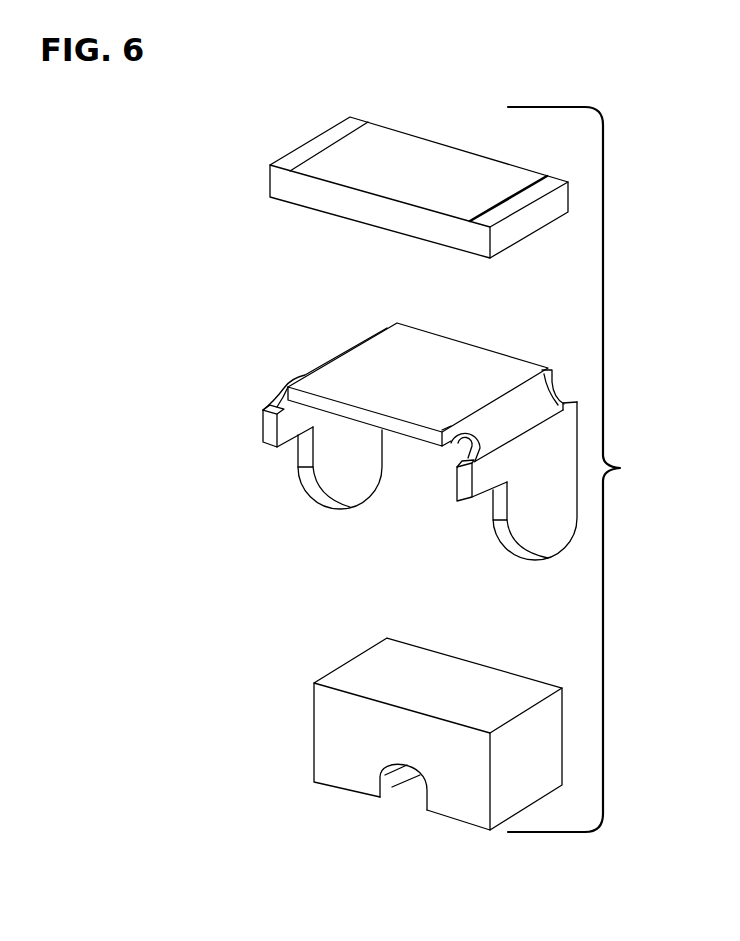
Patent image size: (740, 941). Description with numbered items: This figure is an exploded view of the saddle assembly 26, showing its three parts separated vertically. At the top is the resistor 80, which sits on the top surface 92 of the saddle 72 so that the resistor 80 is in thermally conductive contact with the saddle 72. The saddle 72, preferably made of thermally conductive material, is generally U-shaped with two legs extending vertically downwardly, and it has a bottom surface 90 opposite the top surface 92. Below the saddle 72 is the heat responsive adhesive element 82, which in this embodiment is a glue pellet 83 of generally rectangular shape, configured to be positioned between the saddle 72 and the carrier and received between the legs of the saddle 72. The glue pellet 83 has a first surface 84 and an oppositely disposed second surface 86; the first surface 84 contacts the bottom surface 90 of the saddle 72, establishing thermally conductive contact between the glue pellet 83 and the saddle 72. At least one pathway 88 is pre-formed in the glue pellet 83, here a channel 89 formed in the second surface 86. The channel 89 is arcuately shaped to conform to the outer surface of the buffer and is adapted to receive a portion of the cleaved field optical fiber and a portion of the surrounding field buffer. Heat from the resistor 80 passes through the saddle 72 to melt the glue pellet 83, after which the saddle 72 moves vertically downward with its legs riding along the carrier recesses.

The saddle assembly 26 is at (585, 469).
The resistor 80 is at (313, 139).
The saddle 72 is at (420, 449).
The top surface of the saddle 92 is at (453, 375).
The bottom surface of the saddle 90 is at (426, 441).
The heat responsive adhesive element 82 is at (401, 732).
The first surface 84 is at (433, 670).
The glue pellet 83 is at (522, 798).
The second surface 86 is at (450, 818).
The pathway 88 is at (422, 813).
The channel 89 is at (392, 787).